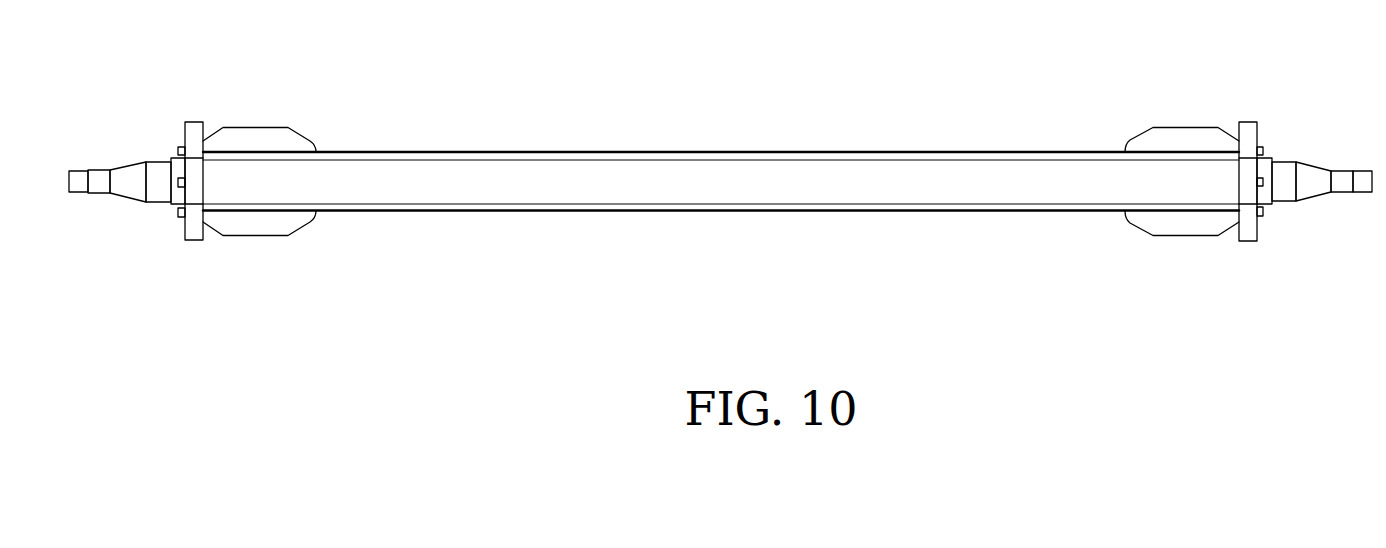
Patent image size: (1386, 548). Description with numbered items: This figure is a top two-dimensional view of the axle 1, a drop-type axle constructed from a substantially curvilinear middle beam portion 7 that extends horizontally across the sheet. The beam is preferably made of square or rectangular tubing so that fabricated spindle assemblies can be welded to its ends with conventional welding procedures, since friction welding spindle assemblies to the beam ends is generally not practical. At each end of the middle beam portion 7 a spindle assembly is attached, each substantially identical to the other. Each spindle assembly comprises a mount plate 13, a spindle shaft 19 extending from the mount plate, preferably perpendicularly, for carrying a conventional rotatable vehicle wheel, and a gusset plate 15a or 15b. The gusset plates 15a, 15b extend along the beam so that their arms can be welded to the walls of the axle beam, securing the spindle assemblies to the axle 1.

The axle 1 is at (512, 256).
The middle beam portion 7 is at (633, 180).
The mount plate 13 is at (1250, 137).
The gusset plate 15a is at (248, 222).
The gusset plate 15b is at (1185, 225).
The spindle shaft 19 is at (1308, 177).